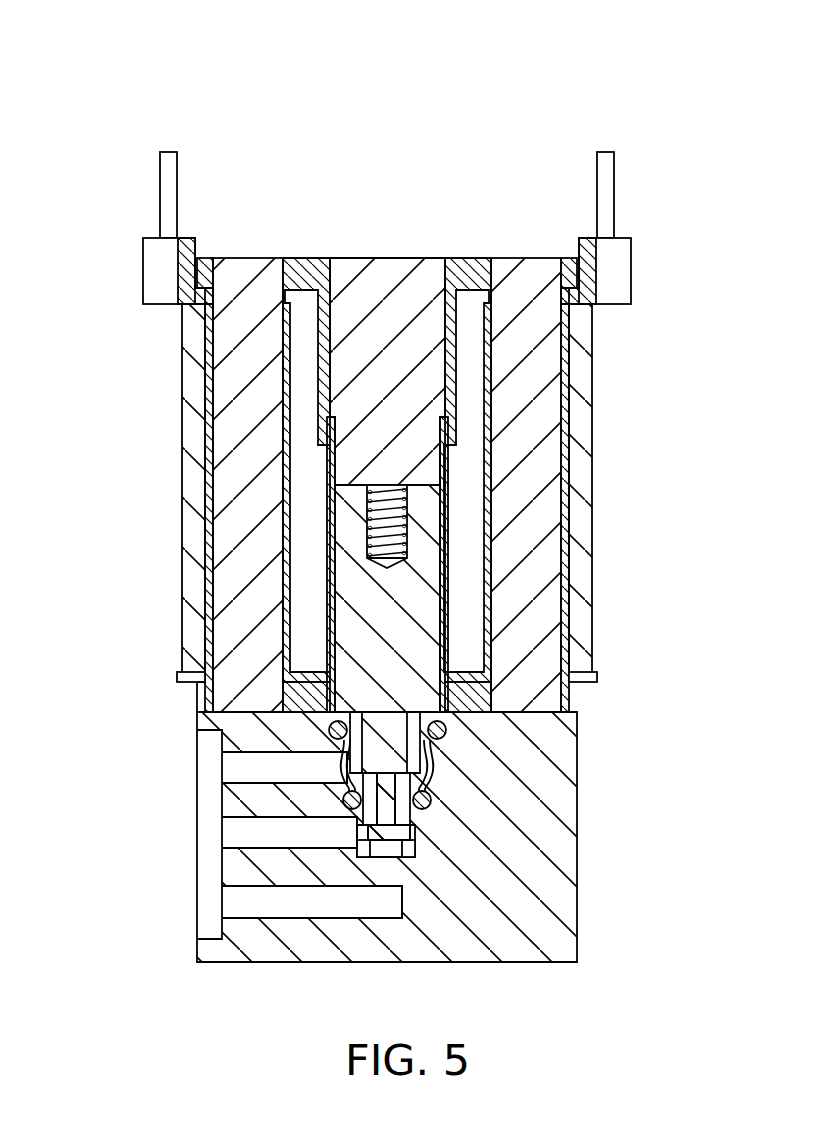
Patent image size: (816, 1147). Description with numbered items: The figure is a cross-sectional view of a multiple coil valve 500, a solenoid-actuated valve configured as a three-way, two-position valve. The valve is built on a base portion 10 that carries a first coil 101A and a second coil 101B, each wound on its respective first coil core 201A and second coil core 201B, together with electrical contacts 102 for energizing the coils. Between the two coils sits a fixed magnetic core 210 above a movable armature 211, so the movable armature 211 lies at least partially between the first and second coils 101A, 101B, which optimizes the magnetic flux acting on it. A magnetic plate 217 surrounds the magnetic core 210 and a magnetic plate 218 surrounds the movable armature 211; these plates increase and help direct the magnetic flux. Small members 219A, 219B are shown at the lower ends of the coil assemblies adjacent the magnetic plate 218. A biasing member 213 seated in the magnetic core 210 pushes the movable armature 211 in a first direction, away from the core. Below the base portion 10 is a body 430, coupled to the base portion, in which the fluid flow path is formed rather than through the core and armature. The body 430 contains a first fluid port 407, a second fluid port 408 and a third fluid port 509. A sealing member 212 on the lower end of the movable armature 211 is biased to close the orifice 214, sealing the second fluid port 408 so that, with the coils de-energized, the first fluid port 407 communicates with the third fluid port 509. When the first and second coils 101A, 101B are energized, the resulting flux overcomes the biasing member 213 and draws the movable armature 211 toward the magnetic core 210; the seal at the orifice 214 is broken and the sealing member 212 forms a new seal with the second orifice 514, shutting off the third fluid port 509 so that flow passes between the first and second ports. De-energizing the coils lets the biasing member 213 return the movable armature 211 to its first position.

The multiple coil valve 500 is at (640, 56).
The base portion 10 is at (666, 355).
The electrical contacts 102 is at (176, 171).
The first coil 101A is at (178, 411).
The second coil 101B is at (594, 453).
The first coil core 201A is at (251, 266).
The second coil core 201B is at (528, 266).
The magnetic plate 217 is at (318, 266).
The magnetic core 210 is at (402, 266).
The movable armature 211 is at (370, 610).
The biasing member 213 is at (407, 512).
The magnetic plate 218 is at (478, 700).
The first shim 219A is at (185, 681).
The second shim 219B is at (588, 682).
The body 430 is at (557, 886).
The third fluid port 509 is at (228, 768).
The first fluid port 407 is at (228, 834).
The second fluid port 408 is at (228, 906).
The second orifice 514 is at (430, 800).
The orifice 214 is at (384, 876).
The sealing member 212 is at (412, 832).